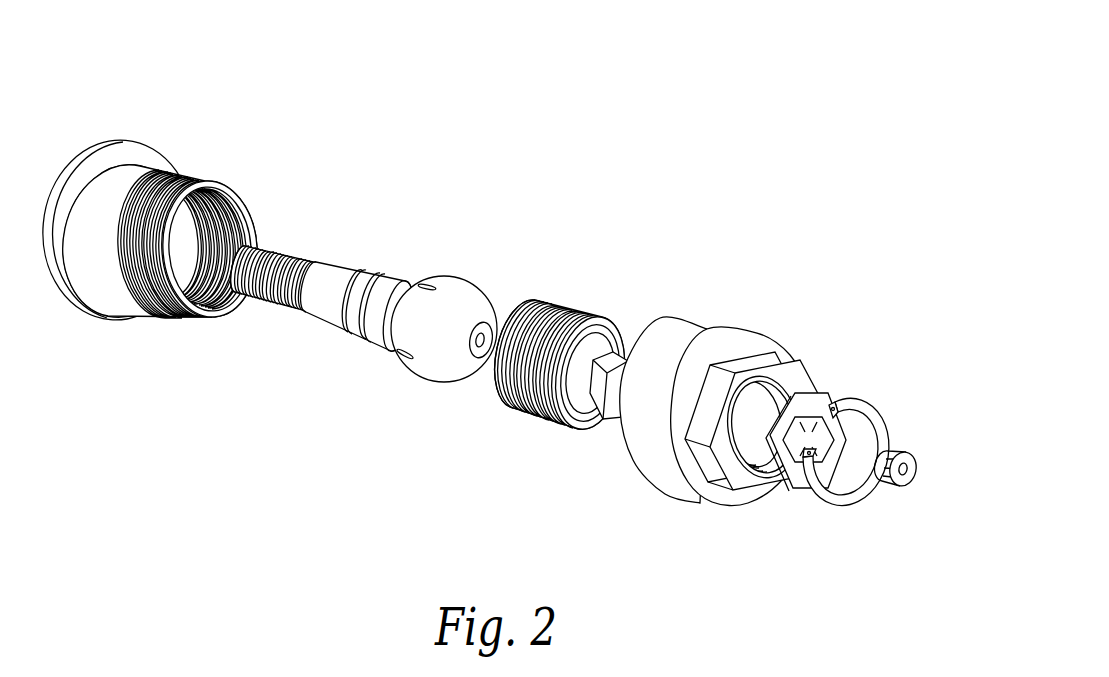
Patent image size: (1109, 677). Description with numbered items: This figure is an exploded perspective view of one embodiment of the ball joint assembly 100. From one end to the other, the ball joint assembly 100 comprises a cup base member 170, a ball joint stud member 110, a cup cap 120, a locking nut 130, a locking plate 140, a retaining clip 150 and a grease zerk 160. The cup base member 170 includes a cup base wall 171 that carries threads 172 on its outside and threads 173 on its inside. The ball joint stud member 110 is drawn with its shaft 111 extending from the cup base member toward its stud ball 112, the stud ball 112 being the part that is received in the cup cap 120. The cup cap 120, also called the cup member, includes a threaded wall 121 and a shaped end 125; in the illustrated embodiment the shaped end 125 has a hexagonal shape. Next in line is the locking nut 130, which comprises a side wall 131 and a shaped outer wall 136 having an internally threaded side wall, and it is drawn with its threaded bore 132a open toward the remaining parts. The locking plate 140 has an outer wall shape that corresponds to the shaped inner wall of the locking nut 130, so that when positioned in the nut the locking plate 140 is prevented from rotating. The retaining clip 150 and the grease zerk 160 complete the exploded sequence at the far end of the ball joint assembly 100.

The ball joint assembly 100 is at (498, 283).
The ball joint stud member 110 is at (362, 299).
The stud shaft 111 is at (306, 340).
The stud ball 112 is at (418, 373).
The cup cap 120 is at (543, 357).
The threaded wall 121 is at (501, 402).
The shaped end 125 is at (586, 424).
The locking nut 130 is at (694, 374).
The side wall 131 is at (629, 472).
The housing threaded bore 132a is at (757, 453).
The shaped outer wall 136 is at (754, 342).
The locking plate 140 is at (819, 369).
The retaining clip 150 is at (881, 380).
The grease zerk 160 is at (928, 435).
The cup base member 170 is at (163, 206).
The cup base wall 171 is at (211, 151).
The threads 172 is at (136, 323).
The threads 173 is at (198, 314).